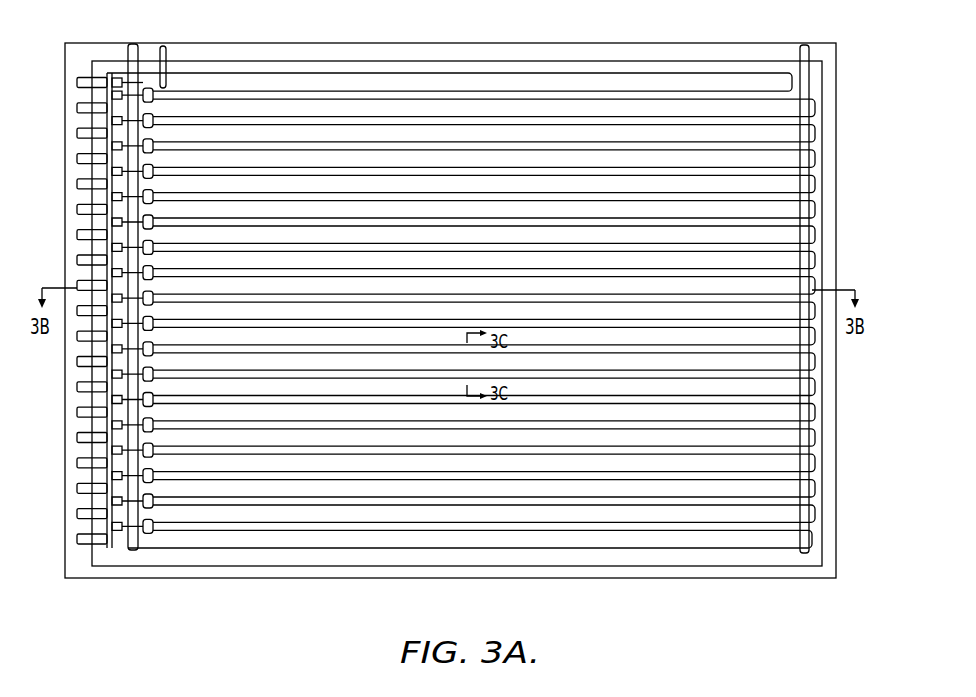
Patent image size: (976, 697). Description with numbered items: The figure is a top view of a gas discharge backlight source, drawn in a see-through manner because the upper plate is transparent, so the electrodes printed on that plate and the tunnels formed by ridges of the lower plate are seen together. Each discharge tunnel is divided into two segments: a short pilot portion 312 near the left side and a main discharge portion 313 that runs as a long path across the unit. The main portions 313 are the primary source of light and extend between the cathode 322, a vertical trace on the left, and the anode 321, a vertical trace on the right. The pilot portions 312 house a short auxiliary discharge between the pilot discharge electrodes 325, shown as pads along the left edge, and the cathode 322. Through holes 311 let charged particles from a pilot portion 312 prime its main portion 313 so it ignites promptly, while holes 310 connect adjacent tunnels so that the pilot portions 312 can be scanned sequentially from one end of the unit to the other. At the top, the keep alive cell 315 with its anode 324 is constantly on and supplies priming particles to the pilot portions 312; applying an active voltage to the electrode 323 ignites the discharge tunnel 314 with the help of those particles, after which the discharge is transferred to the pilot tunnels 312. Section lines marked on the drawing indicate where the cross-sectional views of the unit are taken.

The holes 310 is at (118, 566).
The through holes 311 is at (148, 540).
The pilot portion 312 is at (118, 466).
The main discharge portion 313 is at (542, 511).
The discharge tunnel 314 is at (115, 78).
The keep alive cell 315 is at (148, 85).
The anode 321 is at (806, 45).
The cathode 322 is at (134, 43).
The electrode 323 is at (77, 80).
The anode for keep alive cell 324 is at (163, 48).
The pilot discharge electrodes 325 is at (82, 237).